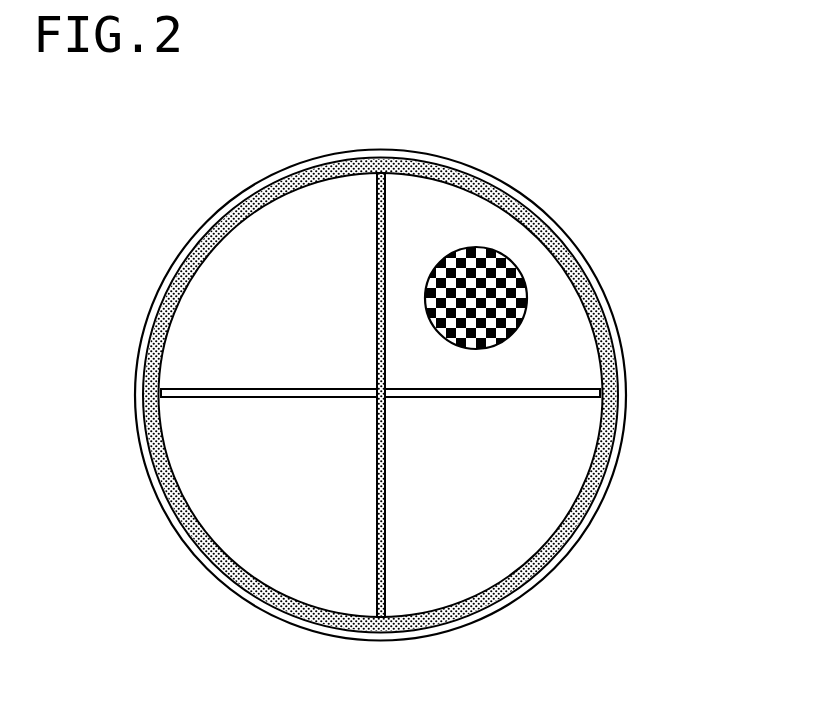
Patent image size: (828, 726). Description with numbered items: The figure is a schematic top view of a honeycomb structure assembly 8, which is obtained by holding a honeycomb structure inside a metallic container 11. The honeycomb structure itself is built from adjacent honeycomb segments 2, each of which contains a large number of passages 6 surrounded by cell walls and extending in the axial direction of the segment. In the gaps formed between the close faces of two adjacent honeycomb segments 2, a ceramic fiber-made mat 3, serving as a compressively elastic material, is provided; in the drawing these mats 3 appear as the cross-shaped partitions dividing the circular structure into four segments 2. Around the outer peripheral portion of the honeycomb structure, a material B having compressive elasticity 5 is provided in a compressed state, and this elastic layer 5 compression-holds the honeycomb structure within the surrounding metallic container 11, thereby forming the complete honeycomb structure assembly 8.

The honeycomb structure assembly 8 is at (414, 367).
The metallic container 11 is at (550, 572).
The material B having compressive elasticity 5 is at (606, 441).
The honeycomb segment 2 is at (558, 490).
The ceramic fiber-made mat 3 is at (386, 588).
The passages 6 is at (520, 272).